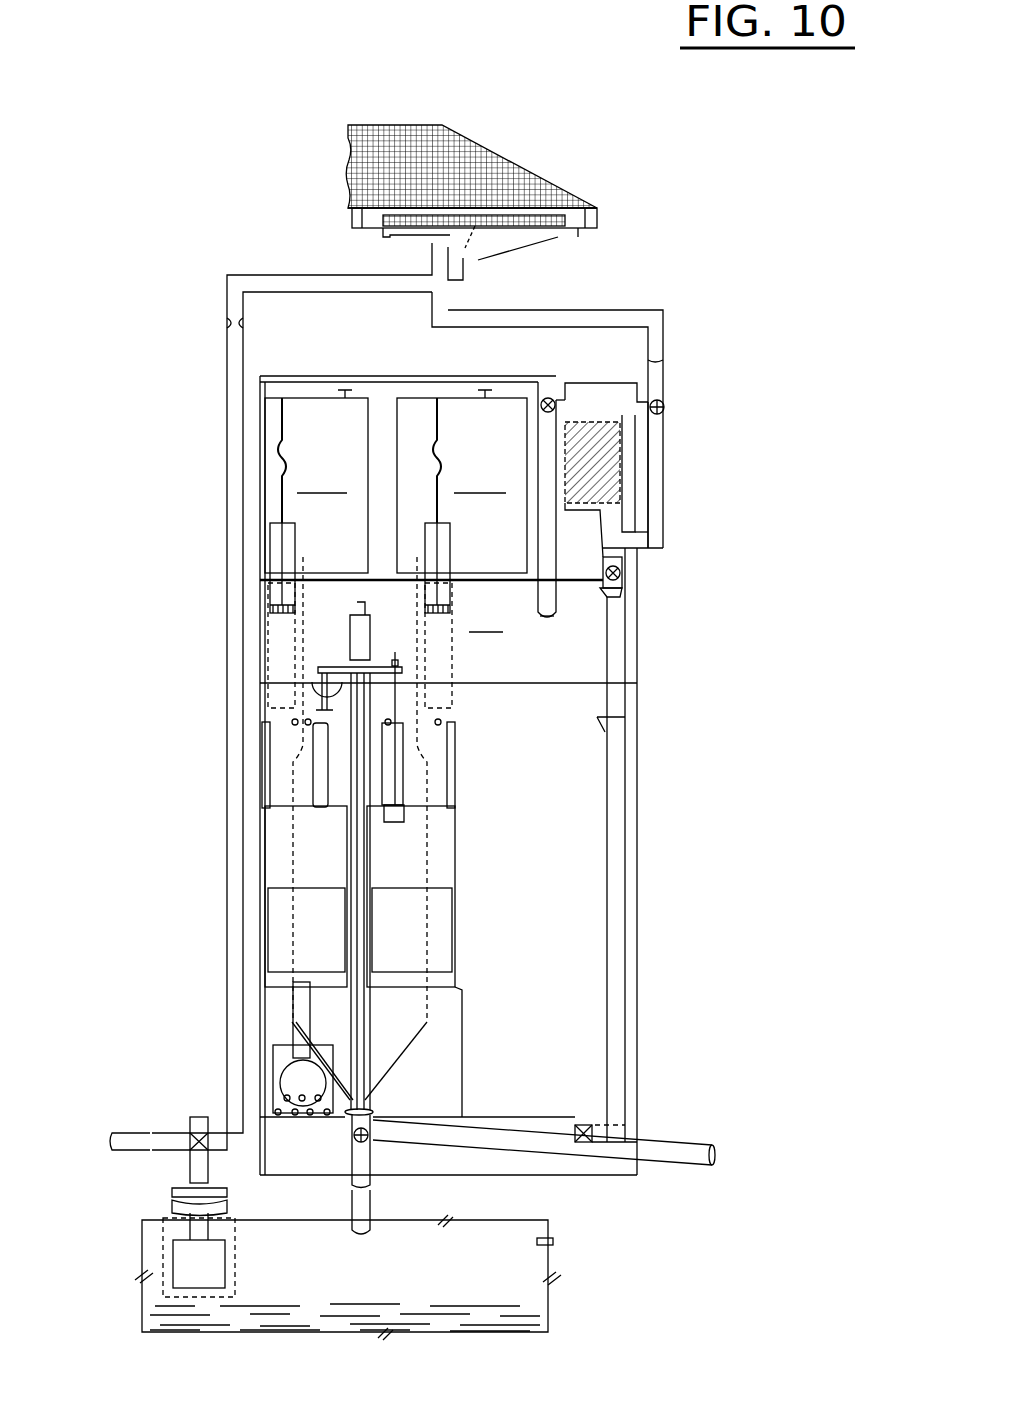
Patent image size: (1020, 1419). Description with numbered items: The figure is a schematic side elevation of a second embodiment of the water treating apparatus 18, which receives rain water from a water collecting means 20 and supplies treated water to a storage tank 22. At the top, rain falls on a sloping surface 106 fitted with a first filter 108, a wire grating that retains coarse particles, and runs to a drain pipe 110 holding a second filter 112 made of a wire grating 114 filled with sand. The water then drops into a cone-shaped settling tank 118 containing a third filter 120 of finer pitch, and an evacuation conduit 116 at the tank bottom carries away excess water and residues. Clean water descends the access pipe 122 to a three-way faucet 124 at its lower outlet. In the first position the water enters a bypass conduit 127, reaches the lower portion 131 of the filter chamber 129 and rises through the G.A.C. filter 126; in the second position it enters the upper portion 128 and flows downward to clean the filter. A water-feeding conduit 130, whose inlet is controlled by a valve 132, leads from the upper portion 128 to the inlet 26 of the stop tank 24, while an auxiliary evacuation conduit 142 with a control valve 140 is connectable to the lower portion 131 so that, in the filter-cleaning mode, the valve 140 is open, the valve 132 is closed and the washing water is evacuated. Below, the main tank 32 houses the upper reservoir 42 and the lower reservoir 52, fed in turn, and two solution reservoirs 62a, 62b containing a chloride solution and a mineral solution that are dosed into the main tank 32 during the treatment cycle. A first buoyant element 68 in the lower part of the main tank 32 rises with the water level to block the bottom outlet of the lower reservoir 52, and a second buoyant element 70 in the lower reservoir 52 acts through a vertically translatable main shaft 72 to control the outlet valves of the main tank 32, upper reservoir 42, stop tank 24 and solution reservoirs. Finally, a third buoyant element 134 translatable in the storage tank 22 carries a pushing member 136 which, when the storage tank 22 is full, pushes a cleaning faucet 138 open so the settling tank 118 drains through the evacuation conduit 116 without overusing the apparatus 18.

The apparatus 18 is at (185, 683).
The water collecting means 20 is at (468, 199).
The storage tank 22 is at (552, 1275).
The stop tank 24 is at (486, 618).
The inlet 26 is at (545, 618).
The main tank 32 is at (267, 853).
The upper reservoir 42 is at (455, 700).
The lower reservoir 52 is at (455, 858).
The solution reservoir 62a is at (316, 501).
The solution reservoir 62b is at (462, 501).
The first buoyant element 68 is at (307, 1080).
The second buoyant element 70 is at (445, 1063).
The main shaft 72 is at (362, 835).
The sloping surface 106 is at (552, 198).
The first filter 108 is at (350, 135).
The drain pipe 110 is at (593, 216).
The second filter 112 is at (373, 220).
The wire grating 114 is at (385, 233).
The evacuation conduit 116 is at (232, 290).
The settling tank 118 is at (540, 238).
The third filter 120 is at (478, 260).
The access pipe 122 is at (432, 320).
The three-way faucet 124 is at (665, 408).
The G.A.C. filter 126 is at (600, 475).
The bypass conduit 127 is at (655, 530).
The upper portion 128 is at (605, 398).
The filter chamber 129 is at (622, 452).
The water-feeding conduit 130 is at (555, 598).
The lower portion 131 is at (610, 540).
The valve 132 is at (548, 398).
The third buoyant element 134 is at (190, 1262).
The pushing member 136 is at (172, 1205).
The cleaning faucet 138 is at (195, 1133).
The control valve 140 is at (630, 585).
The auxiliary evacuation conduit 142 is at (625, 832).